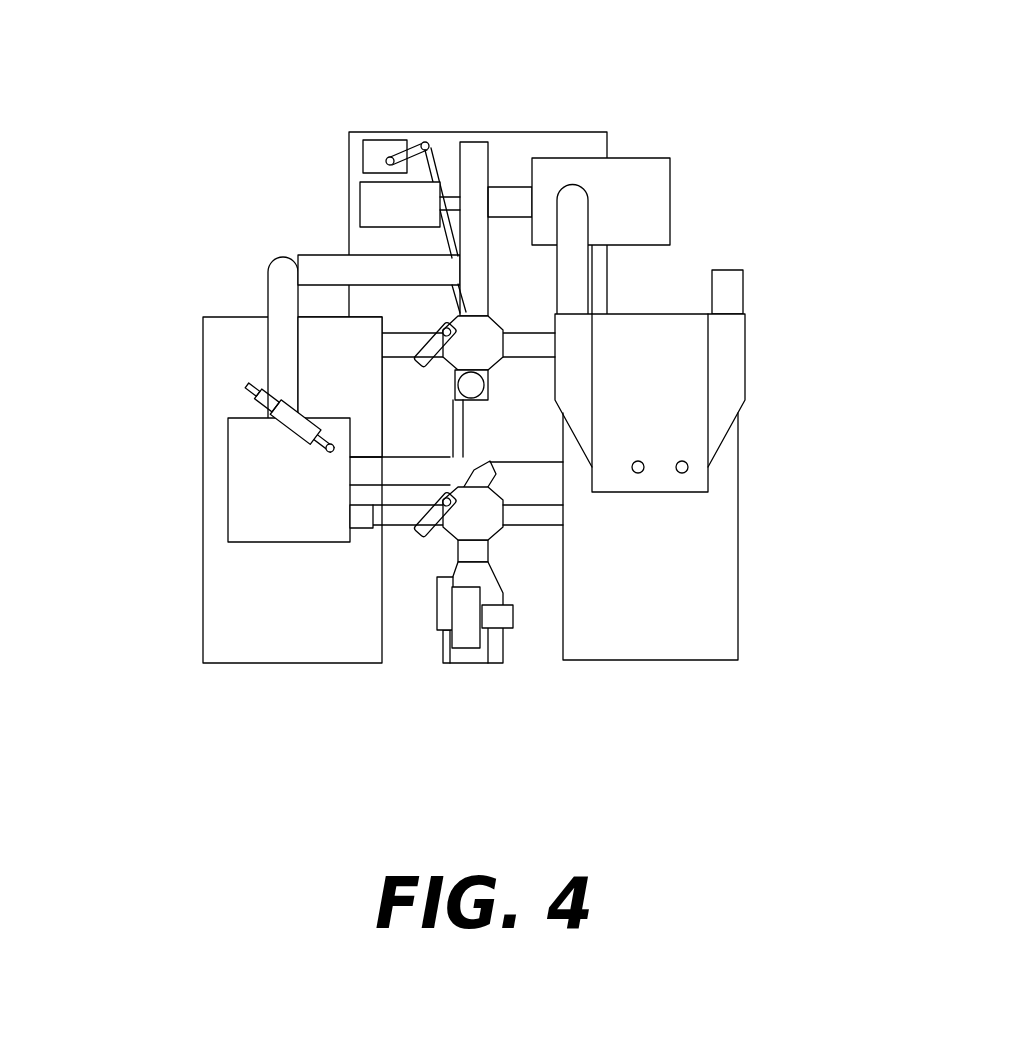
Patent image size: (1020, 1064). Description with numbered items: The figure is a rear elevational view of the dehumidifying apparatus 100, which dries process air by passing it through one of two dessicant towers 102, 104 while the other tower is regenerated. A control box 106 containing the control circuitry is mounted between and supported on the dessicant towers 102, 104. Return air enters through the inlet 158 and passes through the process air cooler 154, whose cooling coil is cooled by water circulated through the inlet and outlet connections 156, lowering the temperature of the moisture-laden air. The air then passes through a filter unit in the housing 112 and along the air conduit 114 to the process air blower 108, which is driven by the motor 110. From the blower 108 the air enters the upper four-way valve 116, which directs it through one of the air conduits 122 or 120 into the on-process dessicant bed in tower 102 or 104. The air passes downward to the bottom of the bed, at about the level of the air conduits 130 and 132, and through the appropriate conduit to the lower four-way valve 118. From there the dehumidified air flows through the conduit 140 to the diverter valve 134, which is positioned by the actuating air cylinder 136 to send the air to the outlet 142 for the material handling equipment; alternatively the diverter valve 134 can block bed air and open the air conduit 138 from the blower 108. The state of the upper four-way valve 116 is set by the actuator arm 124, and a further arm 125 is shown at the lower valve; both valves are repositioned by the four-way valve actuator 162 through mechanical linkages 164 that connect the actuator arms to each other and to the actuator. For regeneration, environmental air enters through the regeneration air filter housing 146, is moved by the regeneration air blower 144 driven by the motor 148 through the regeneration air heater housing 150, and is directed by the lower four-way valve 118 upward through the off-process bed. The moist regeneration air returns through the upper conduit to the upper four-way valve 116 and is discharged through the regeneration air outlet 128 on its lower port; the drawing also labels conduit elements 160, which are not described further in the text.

The dehumidifying apparatus 100 is at (664, 94).
The dessicant tower 102 is at (740, 471).
The dessicant tower 104 is at (203, 336).
The control box 106 is at (350, 147).
The process air blower 108 is at (460, 140).
The motor 110 is at (360, 197).
The housing 112 is at (670, 181).
The air conduit 114 is at (512, 187).
The upper 4-way valve 116 is at (382, 352).
The lower 4-way valve 118 is at (498, 490).
The air conduit 120 is at (418, 333).
The air conduit 122 is at (553, 366).
The actuator arm 124 is at (493, 326).
The lower pivot joint 125 is at (488, 463).
The regeneration air outlet 128 is at (455, 384).
The air conduit 130 is at (527, 530).
The air conduit 132 is at (412, 530).
The diverter valve 134 is at (228, 473).
The actuating air cylinder 136 is at (257, 498).
The air conduit 138 is at (268, 276).
The conduit 140 is at (362, 540).
The outlet 142 is at (363, 516).
The regeneration air blower 144 is at (452, 665).
The regeneration air filter housing 146 is at (437, 630).
The motor 148 is at (490, 665).
The regeneration air heater housing 150 is at (497, 666).
The process air cooler 154 is at (603, 493).
The inlet and outlet connections 156 is at (644, 472).
The inlet 158 is at (745, 293).
The conduit 160 is at (588, 263).
The 4-way valve actuator 162 is at (357, 134).
The mechanical linkages 164 is at (330, 449).